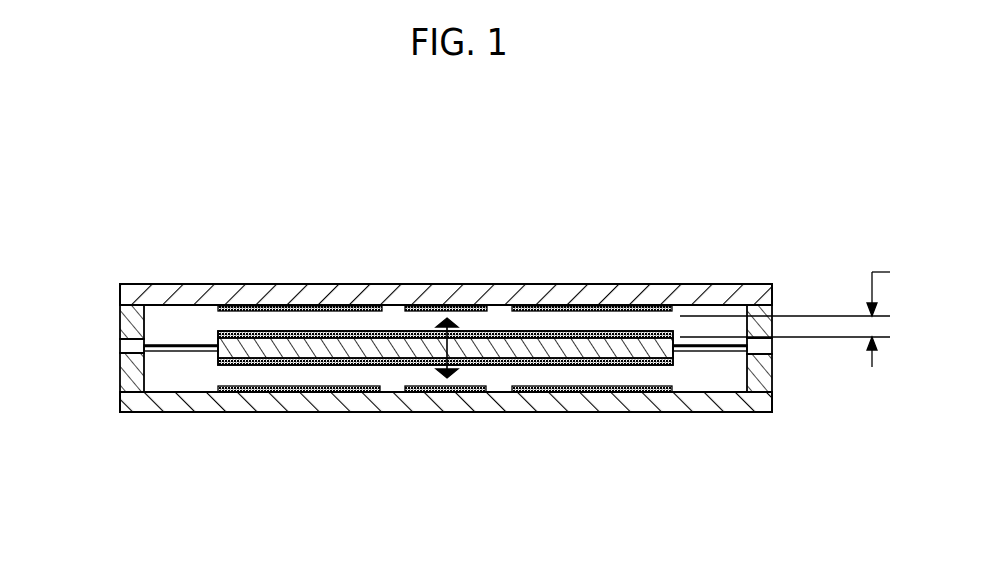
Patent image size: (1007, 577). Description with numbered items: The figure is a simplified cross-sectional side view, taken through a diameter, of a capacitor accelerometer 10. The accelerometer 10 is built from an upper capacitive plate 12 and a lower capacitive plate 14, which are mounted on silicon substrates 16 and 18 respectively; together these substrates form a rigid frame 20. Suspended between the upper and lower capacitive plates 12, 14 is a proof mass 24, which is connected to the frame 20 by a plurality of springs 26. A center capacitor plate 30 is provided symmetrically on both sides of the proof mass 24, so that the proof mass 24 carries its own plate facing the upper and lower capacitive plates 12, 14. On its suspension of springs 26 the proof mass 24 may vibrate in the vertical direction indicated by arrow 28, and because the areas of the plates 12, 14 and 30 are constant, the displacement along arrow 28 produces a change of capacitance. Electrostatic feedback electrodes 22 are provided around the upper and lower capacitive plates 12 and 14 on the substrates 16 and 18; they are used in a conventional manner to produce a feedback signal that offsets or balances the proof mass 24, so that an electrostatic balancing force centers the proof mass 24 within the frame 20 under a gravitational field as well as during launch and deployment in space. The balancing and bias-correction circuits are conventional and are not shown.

The accelerometer 10 is at (690, 152).
The upper capacitive plate 12 is at (420, 306).
The lower capacitive plate 14 is at (477, 392).
The silicon substrate 16 is at (540, 290).
The silicon substrate 18 is at (553, 412).
The frame 20 is at (110, 321).
The electrostatic feedback electrodes 22 is at (450, 331).
The proof mass 24 is at (489, 349).
The springs 26 is at (160, 352).
The arrow 28 is at (443, 376).
The center capacitor plate 30 is at (372, 362).